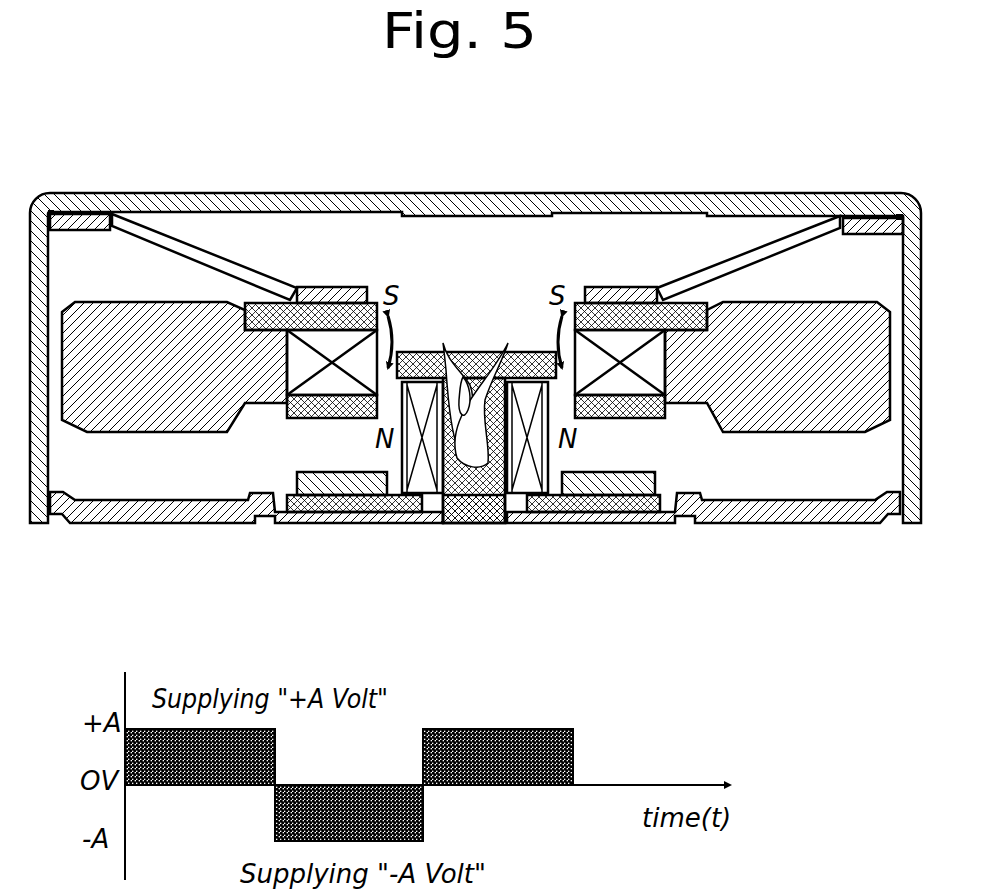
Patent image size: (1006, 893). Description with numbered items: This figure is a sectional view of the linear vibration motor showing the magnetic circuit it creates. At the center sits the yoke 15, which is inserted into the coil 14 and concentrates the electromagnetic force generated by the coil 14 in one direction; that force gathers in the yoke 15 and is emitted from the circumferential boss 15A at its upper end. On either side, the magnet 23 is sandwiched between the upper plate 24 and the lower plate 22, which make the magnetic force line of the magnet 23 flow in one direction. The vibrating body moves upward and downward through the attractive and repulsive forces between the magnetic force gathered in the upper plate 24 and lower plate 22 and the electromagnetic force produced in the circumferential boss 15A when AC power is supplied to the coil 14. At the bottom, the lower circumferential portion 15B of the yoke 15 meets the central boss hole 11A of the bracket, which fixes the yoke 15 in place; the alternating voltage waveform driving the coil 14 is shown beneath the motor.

The yoke 15 is at (472, 338).
The circumferential boss 15A is at (533, 350).
The lower circumferential portion 15B is at (467, 503).
The coil 14 is at (418, 478).
The central boss hole 11A is at (510, 507).
The lower plate 22 is at (630, 422).
The magnet 23 is at (653, 420).
The upper plate 24 is at (693, 310).